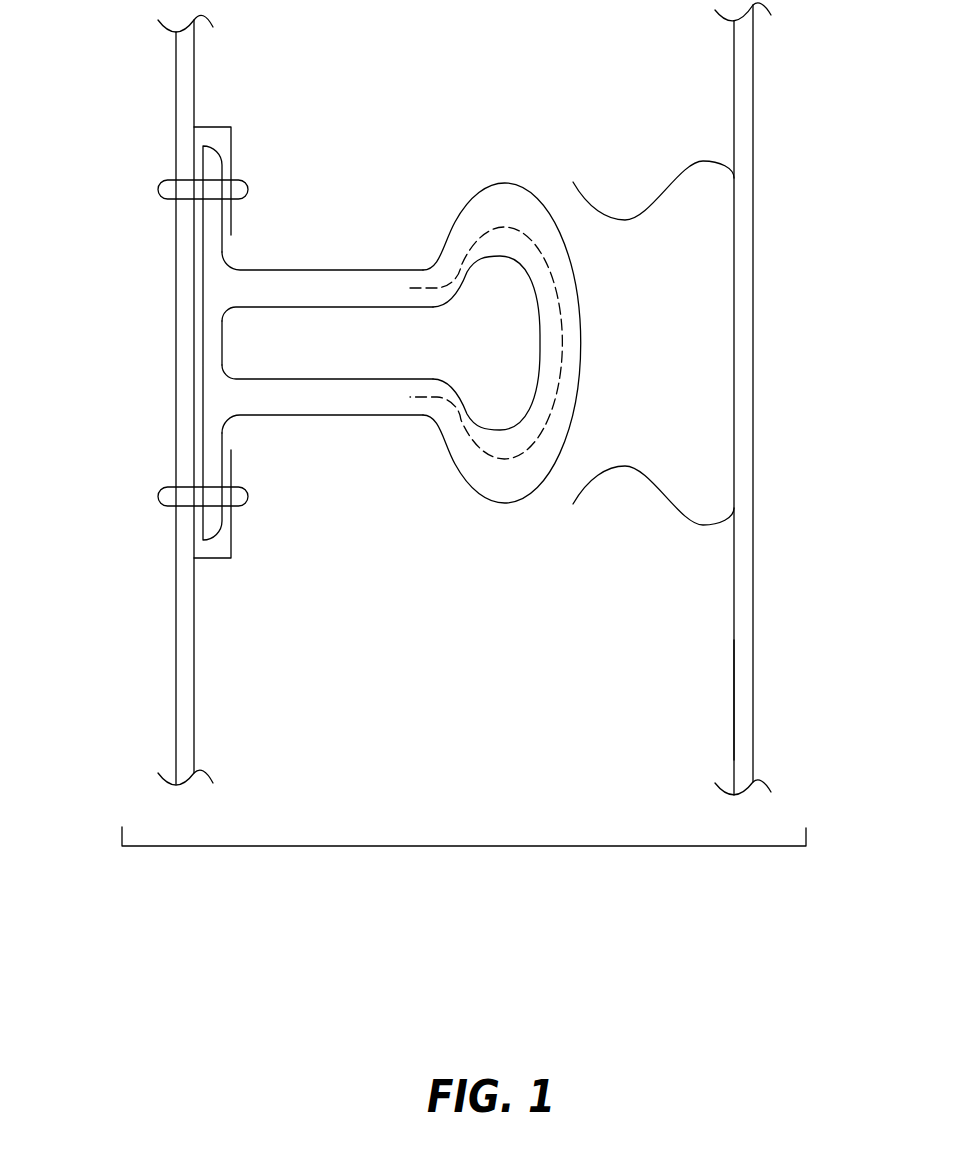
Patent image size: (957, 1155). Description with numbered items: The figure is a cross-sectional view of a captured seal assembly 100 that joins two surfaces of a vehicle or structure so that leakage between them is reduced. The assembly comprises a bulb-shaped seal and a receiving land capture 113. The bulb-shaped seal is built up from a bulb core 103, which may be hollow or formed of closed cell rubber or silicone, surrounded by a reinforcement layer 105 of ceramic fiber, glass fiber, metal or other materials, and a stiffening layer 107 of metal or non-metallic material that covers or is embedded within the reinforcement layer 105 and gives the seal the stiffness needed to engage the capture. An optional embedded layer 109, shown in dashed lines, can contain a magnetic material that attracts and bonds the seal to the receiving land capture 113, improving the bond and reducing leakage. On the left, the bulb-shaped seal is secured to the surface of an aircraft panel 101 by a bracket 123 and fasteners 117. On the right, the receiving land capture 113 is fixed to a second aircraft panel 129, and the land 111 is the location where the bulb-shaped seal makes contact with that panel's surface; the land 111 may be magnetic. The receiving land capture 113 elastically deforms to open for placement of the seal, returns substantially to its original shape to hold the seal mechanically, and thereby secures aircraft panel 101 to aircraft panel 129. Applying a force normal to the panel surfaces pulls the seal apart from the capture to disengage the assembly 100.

The seal assembly 100 is at (462, 892).
The aircraft panel 101 is at (190, 643).
The bulb core 103 is at (230, 342).
The reinforcement layer 105 is at (283, 290).
The stiffening layer 107 is at (507, 505).
The embedded layer 109 is at (492, 457).
The land 111 is at (738, 332).
The receiving land capture 113 is at (680, 166).
The fastener 117 is at (158, 189).
The bracket 123 is at (213, 127).
The aircraft panel 129 is at (742, 703).